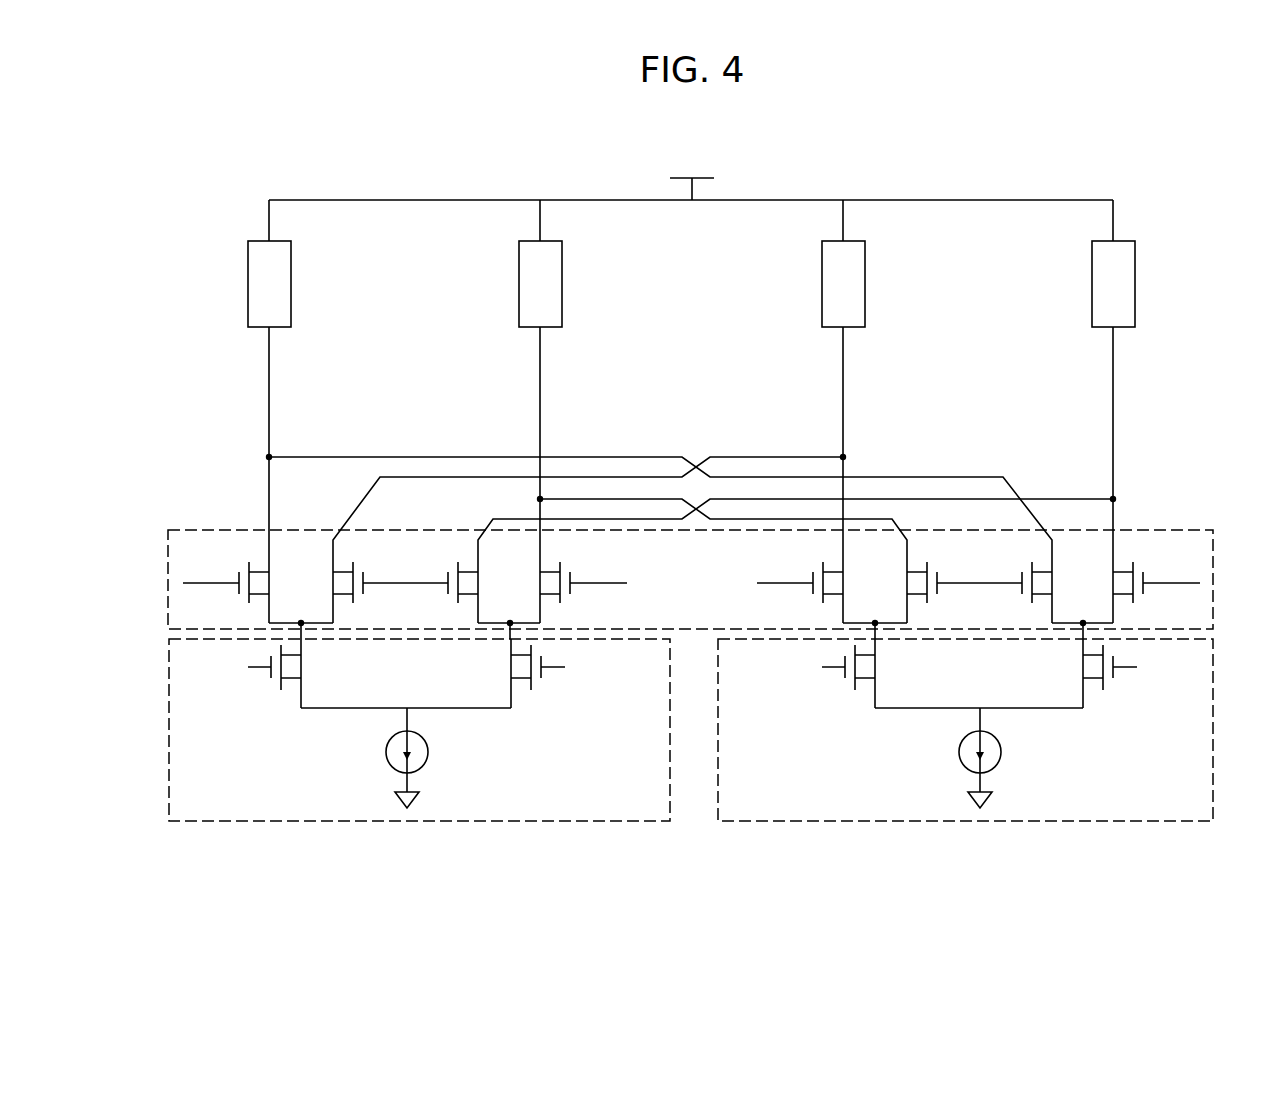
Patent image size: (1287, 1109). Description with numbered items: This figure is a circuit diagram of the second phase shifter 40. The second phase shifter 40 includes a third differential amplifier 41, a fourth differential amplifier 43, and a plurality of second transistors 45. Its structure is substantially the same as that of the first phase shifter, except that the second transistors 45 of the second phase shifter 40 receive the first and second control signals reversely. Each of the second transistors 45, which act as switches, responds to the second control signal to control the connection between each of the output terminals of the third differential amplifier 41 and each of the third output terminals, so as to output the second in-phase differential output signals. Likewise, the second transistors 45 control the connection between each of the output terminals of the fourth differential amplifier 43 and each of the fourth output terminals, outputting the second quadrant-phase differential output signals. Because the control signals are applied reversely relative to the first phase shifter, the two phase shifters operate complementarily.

The second phase shifter 40 is at (1156, 151).
The third differential amplifier 41 is at (169, 728).
The fourth differential amplifier 43 is at (1215, 730).
The second transistors 45 is at (1216, 581).